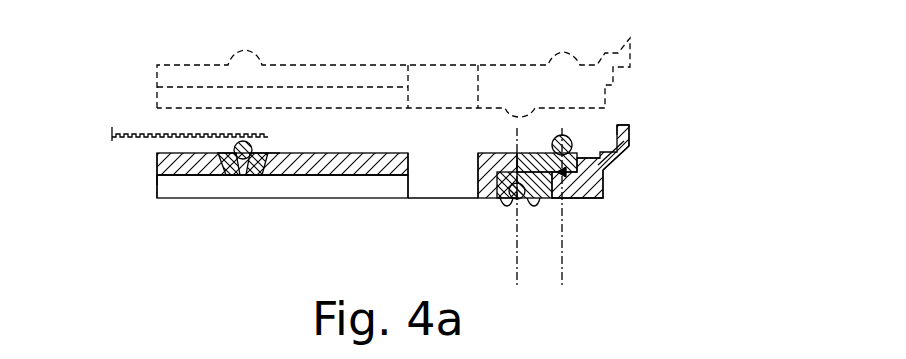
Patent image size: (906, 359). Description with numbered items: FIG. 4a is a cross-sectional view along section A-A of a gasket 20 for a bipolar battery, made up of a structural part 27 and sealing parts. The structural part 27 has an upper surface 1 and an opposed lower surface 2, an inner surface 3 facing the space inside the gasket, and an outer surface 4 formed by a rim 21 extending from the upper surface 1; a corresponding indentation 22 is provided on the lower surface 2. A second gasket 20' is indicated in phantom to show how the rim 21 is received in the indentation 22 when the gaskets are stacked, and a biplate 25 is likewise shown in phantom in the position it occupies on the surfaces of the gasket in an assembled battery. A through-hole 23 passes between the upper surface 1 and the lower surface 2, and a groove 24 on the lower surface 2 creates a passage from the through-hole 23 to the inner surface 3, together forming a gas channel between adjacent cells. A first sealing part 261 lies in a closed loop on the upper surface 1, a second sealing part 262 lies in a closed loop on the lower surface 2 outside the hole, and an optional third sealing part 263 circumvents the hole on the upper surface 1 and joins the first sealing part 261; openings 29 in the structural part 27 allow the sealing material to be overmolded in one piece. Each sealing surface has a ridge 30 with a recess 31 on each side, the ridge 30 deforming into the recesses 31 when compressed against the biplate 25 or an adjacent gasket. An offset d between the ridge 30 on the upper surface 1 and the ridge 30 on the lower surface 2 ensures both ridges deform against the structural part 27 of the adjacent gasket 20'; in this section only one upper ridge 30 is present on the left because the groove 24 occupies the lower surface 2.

The upper surface 1 is at (387, 143).
The lower surface 2 is at (370, 209).
The inner surface 3 is at (148, 190).
The outer surface 4 is at (647, 151).
The gasket 20 is at (296, 199).
The second gasket 20' is at (383, 67).
The rim 21 is at (648, 133).
The indentation 22 is at (618, 195).
The through-hole 23 is at (444, 172).
The groove 24 is at (173, 190).
The biplate 25 is at (143, 134).
The first sealing part 261 is at (272, 152).
The second sealing part 262 is at (547, 198).
The third sealing part 263 is at (580, 140).
The structural part 27 is at (155, 182).
The openings 29 is at (612, 185).
The ridge 30 is at (236, 176).
The recess 31 is at (218, 176).
The offset d is at (577, 278).